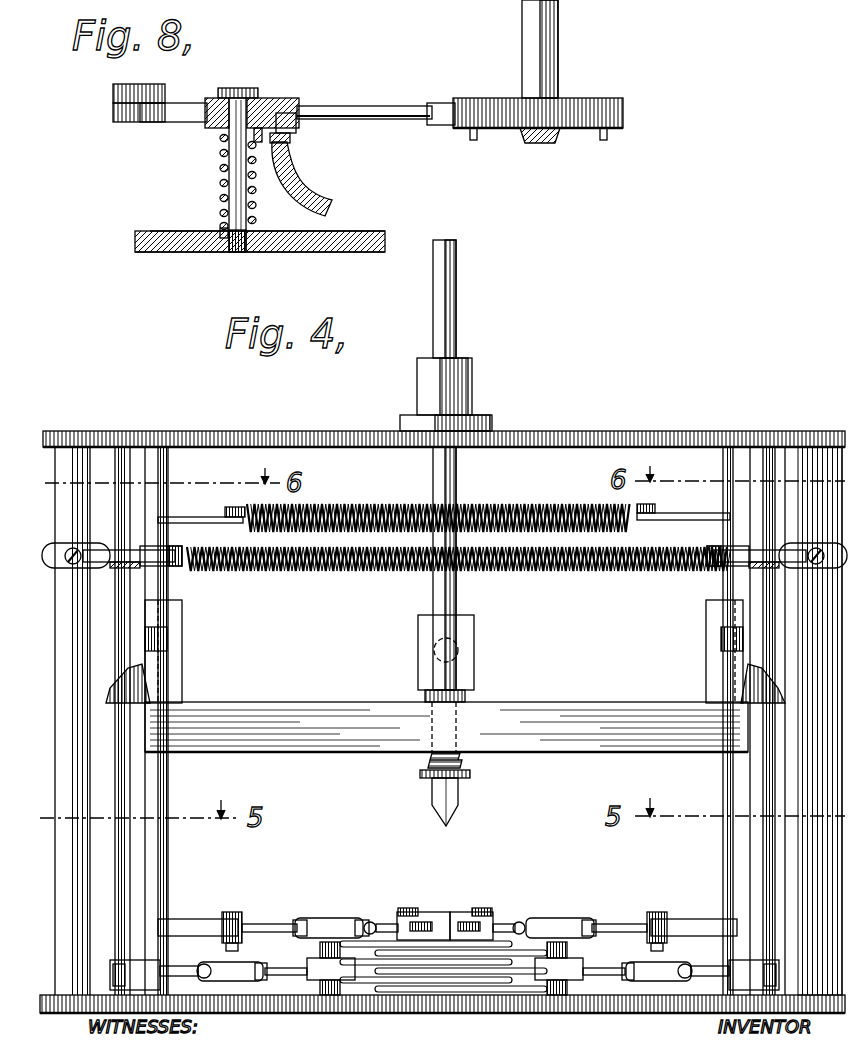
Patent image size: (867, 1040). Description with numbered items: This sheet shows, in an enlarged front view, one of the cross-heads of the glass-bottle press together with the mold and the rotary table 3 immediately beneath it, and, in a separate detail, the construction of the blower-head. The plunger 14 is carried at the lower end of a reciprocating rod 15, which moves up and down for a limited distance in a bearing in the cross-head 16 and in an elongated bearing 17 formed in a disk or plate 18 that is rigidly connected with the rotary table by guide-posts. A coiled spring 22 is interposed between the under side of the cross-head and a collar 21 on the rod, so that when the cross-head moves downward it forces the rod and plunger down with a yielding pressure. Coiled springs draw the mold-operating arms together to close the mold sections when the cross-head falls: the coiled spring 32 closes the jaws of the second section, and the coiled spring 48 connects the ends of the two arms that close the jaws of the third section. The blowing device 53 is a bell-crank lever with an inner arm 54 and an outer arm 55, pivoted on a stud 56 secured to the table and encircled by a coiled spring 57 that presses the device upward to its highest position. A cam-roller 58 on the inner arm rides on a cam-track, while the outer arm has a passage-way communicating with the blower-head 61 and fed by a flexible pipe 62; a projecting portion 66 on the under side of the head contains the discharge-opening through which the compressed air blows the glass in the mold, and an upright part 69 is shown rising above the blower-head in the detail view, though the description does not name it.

In FIG. 8, the rotary table 3 is at (350, 252).
In FIG. 4, the rotary table 3 is at (380, 1013).
In FIG. 4, the plunger 14 is at (458, 792).
In FIG. 4, the reciprocating rod 15 is at (458, 600).
In FIG. 4, the cross-head 16 is at (446, 727).
In FIG. 4, the elongated bearing 17 is at (468, 395).
In FIG. 4, the disk or plate 18 is at (565, 430).
In FIG. 4, the collar 21 is at (470, 774).
In FIG. 4, the coiled spring 22 is at (432, 758).
In FIG. 4, the coiled spring 32 is at (330, 505).
In FIG. 4, the coiled spring 48 is at (322, 572).
In FIG. 8, the blowing device 53 is at (293, 98).
In FIG. 8, the inner arm 54 is at (165, 118).
In FIG. 8, the outer arm 55 is at (357, 106).
In FIG. 8, the stud 56 is at (234, 158).
In FIG. 8, the coiled spring 57 is at (222, 212).
In FIG. 8, the cam-roller 58 is at (115, 90).
In FIG. 8, the blower-head 61 is at (470, 98).
In FIG. 8, the flexible pipe 62 is at (300, 195).
In FIG. 8, the projecting portion 66 is at (555, 143).
In FIG. 8, the shaft 69 is at (548, 68).